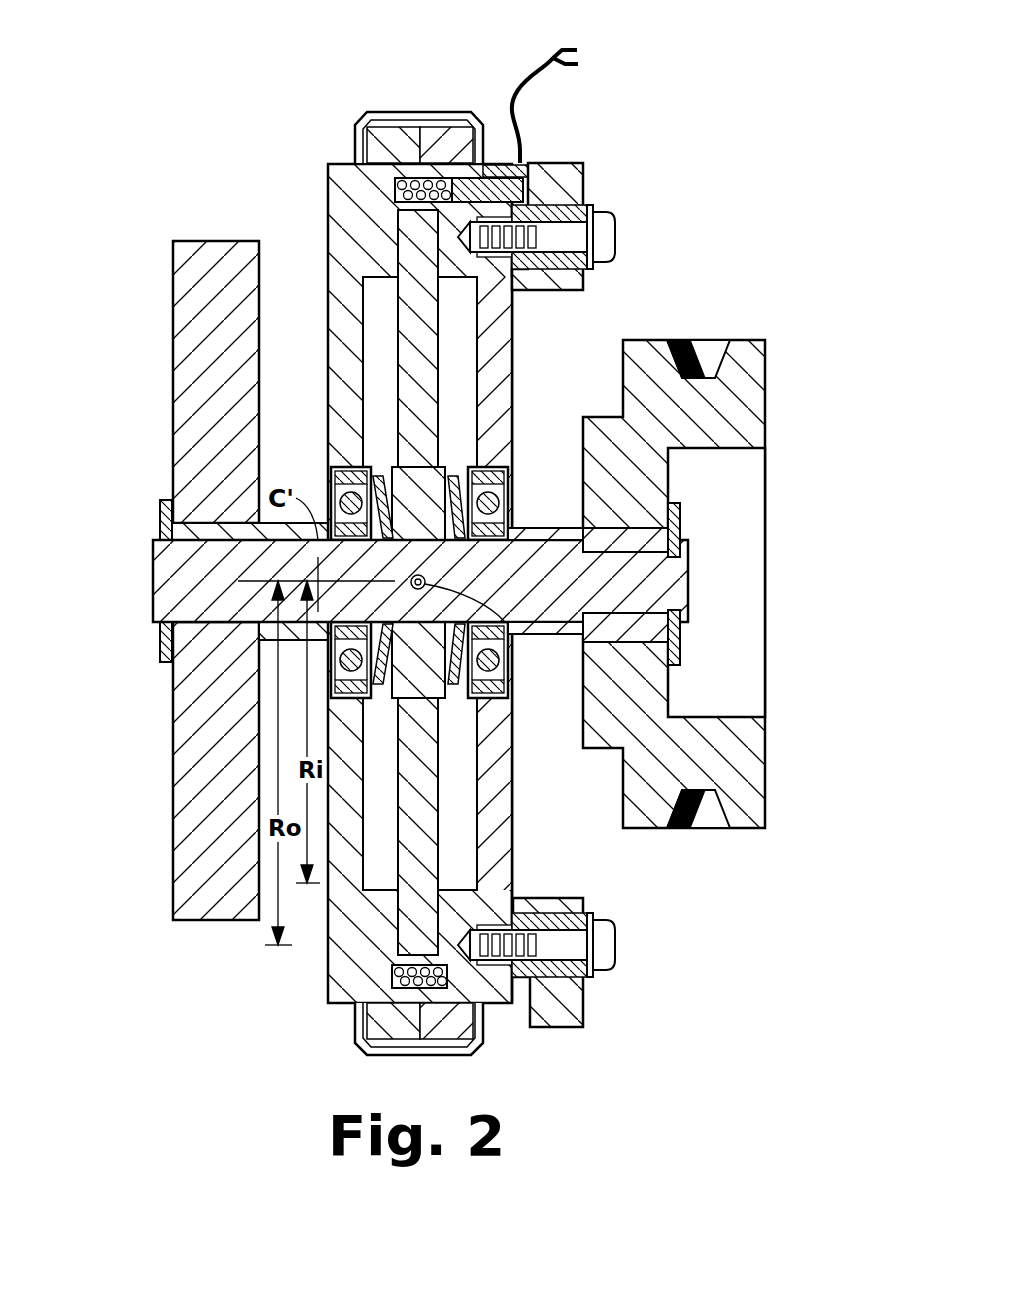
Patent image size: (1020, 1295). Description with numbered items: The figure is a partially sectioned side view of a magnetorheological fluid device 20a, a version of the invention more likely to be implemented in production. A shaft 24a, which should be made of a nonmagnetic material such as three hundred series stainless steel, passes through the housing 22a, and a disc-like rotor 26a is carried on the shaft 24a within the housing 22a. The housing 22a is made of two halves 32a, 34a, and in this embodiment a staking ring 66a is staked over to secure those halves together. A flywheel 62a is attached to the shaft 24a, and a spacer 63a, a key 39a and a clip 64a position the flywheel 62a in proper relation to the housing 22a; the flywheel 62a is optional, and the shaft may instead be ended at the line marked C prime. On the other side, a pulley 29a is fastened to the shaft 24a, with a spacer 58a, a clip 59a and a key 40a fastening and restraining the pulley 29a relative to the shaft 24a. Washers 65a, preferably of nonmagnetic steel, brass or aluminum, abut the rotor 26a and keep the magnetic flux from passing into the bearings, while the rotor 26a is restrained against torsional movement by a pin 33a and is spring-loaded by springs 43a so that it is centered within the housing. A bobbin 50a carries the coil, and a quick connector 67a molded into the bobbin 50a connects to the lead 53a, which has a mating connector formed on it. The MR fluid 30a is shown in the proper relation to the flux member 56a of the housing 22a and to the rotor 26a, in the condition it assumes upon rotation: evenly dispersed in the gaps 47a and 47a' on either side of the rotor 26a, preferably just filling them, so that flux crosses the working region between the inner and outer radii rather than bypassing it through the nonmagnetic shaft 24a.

The MR fluid device 20a is at (737, 138).
The housing 22a is at (328, 195).
The shaft 24a is at (153, 594).
The rotor 26a is at (513, 730).
The pulley 29a is at (765, 432).
The lower bearing 30a is at (430, 950).
The hub left wall 32a is at (328, 330).
The lower right bearing 33a is at (513, 650).
The hub right wall 34a is at (512, 345).
The key 39a is at (190, 545).
The key 40a is at (668, 500).
The upper left bearing 43a is at (350, 467).
The gap 47a is at (285, 339).
The gap 47a' is at (570, 371).
The bobbin 50a is at (505, 920).
The lead 53a is at (528, 76).
The flux member 56a is at (445, 1015).
The spacer 58a is at (510, 508).
The clip 59a is at (690, 660).
The flywheel 62a is at (173, 310).
The spacer 63a is at (335, 480).
The clip 64a is at (160, 505).
The washers 65a is at (388, 472).
The staking ring 66a is at (395, 112).
The quick connector 67a is at (490, 163).